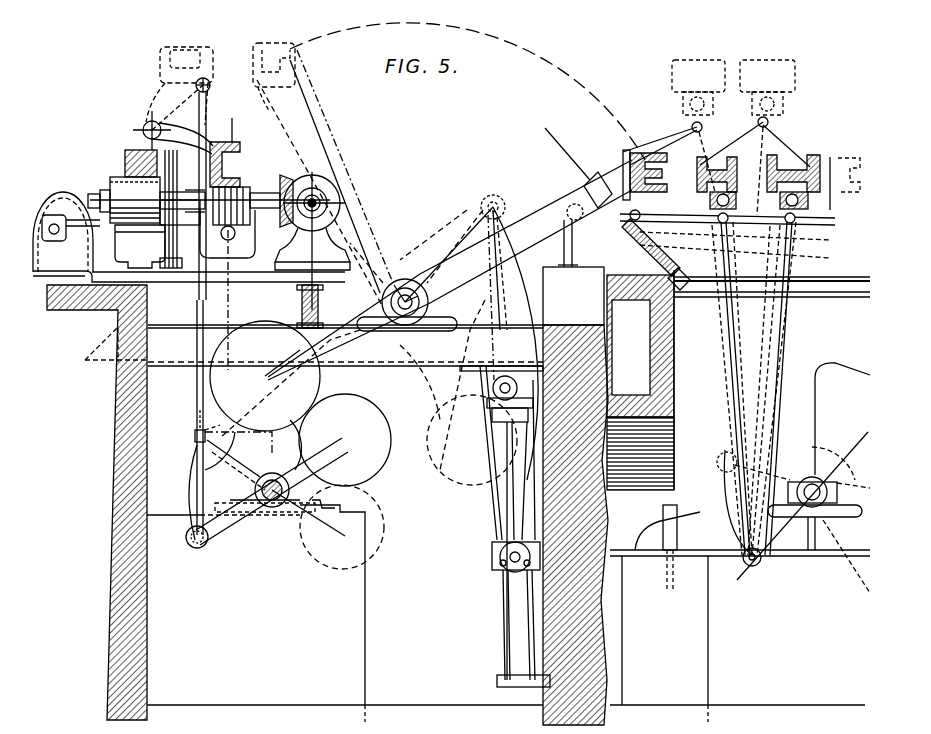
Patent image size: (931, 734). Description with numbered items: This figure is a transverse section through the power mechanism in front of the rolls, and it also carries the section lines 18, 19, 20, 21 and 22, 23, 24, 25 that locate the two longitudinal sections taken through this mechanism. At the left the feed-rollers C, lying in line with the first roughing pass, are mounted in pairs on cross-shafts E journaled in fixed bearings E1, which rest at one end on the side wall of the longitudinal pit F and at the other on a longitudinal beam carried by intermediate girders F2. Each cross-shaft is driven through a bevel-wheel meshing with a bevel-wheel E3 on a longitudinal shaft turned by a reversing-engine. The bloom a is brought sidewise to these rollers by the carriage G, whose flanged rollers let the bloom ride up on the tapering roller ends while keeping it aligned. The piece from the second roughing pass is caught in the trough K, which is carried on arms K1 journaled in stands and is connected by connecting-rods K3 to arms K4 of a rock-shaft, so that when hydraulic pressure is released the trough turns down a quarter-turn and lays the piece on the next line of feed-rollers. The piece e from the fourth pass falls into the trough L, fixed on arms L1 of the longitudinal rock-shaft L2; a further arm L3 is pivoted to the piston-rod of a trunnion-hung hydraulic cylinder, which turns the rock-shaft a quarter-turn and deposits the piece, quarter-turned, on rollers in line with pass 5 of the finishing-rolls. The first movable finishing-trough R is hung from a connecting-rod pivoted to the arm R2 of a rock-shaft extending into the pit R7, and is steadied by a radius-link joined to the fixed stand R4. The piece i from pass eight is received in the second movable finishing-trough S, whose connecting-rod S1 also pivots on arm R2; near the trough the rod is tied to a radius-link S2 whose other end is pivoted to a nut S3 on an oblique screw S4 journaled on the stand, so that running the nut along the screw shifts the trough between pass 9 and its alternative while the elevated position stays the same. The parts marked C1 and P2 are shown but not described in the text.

The feed-rollers C is at (135, 200).
The cylinder flange C1 is at (112, 178).
The bloom a is at (125, 172).
The carriage G is at (140, 246).
The cross-shafts E is at (178, 188).
The fixed bearings E1 is at (307, 282).
The bevel-wheel E3 is at (312, 249).
The trough K is at (240, 143).
The arms K1 is at (181, 119).
The connecting-rods K3 is at (197, 308).
The arms K4 is at (208, 542).
The section line 21 is at (231, 121).
The piece e is at (240, 166).
The trough L is at (290, 52).
The arms L1 is at (507, 219).
The longitudinal rock-shaft L2 is at (324, 340).
The arm L3 is at (517, 392).
The longitudinal pit F is at (424, 573).
The intermediate girders F2 is at (349, 327).
The trough R is at (672, 84).
The arm R2 is at (587, 228).
The fixed stand R4 is at (526, 215).
The pit R7 is at (803, 458).
The trough S is at (817, 158).
The connecting-rod S1 is at (772, 388).
The radius-link S2 is at (727, 228).
The nut S3 is at (645, 181).
The screw S4 is at (656, 250).
The pass 9 is at (714, 166).
The piece i is at (789, 165).
The section line 25 is at (791, 163).
The section line 23 is at (819, 498).
The section line 24 is at (800, 470).
The pivot P2 is at (754, 566).
The section line 22 is at (812, 520).
The pass 5 is at (240, 468).
The section line 18 is at (272, 520).
The section line 19 is at (270, 470).
The section line 20 is at (235, 457).